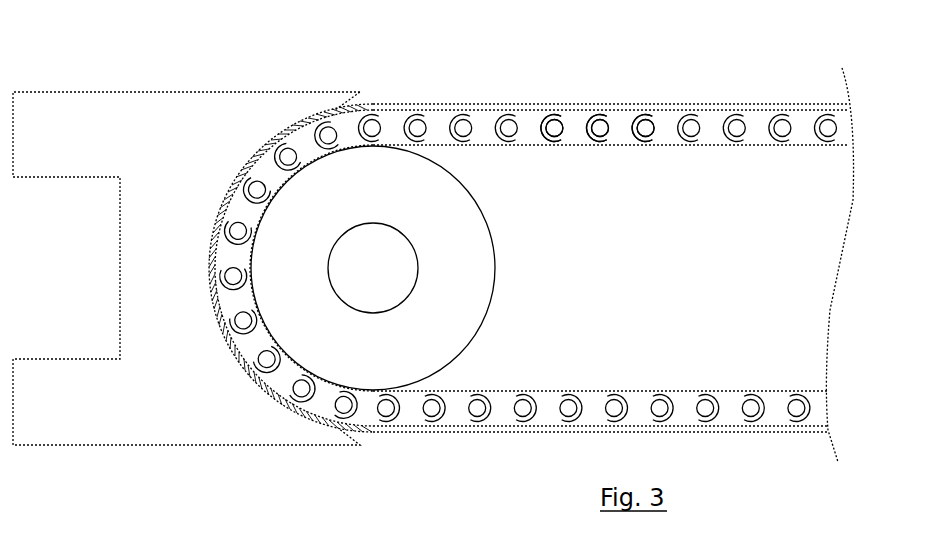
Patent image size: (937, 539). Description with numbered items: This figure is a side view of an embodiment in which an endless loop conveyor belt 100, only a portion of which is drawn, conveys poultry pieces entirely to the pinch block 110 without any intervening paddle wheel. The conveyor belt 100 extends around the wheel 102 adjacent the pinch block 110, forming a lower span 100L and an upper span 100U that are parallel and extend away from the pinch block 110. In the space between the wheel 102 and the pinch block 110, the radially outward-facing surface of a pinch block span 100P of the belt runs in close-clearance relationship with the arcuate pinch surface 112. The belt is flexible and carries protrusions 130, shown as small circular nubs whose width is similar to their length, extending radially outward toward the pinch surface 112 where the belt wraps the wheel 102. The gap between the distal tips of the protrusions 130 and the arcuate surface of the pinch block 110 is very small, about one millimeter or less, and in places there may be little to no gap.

The endless loop conveyor belt 100 is at (800, 63).
The upper span 100U is at (662, 148).
The lower span 100L is at (685, 388).
The pinch block span 100P is at (245, 230).
The wheel 102 is at (392, 205).
The pinch block 110 is at (192, 142).
The arcuate pinch surface 112 is at (365, 90).
The protrusions 130 is at (568, 106).